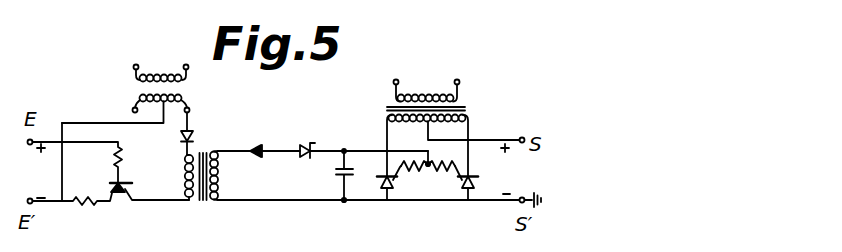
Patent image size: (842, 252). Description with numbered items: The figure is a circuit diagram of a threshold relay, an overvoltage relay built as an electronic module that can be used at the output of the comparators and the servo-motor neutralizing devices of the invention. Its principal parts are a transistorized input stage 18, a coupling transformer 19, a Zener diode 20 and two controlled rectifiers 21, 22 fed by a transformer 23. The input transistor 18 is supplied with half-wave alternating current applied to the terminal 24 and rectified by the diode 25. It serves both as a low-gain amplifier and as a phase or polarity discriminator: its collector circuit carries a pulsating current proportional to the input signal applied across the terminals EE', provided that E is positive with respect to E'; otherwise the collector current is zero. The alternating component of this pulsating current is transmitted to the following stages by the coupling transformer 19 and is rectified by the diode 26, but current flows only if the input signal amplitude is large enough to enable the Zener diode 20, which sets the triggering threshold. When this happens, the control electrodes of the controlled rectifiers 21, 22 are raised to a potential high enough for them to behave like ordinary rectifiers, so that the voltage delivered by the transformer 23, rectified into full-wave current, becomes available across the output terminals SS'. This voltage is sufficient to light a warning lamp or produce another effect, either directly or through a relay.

The transistorized input stage 18 is at (117, 201).
The coupling transformer 19 is at (200, 205).
The Zener diode 20 is at (312, 142).
The controlled rectifier 21 is at (396, 184).
The controlled rectifier 22 is at (465, 182).
The transformer 23 is at (427, 86).
The terminal 24 is at (190, 108).
The diode 25 is at (195, 136).
The diode 26 is at (257, 147).